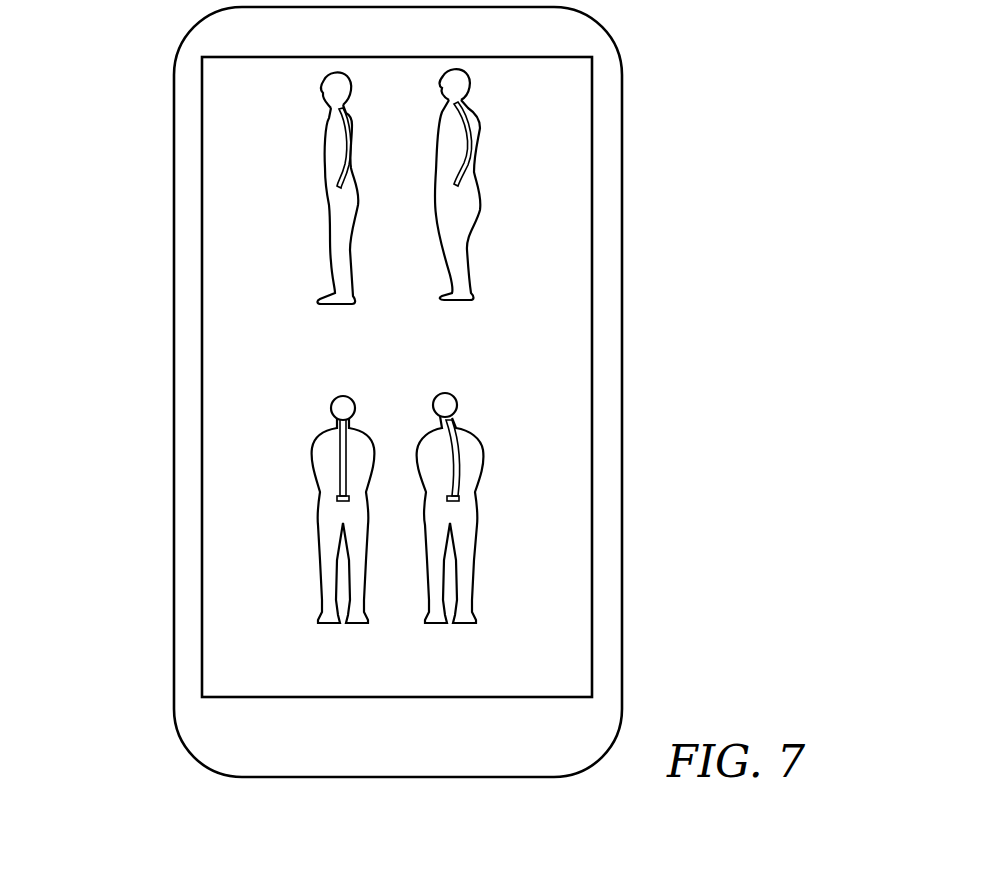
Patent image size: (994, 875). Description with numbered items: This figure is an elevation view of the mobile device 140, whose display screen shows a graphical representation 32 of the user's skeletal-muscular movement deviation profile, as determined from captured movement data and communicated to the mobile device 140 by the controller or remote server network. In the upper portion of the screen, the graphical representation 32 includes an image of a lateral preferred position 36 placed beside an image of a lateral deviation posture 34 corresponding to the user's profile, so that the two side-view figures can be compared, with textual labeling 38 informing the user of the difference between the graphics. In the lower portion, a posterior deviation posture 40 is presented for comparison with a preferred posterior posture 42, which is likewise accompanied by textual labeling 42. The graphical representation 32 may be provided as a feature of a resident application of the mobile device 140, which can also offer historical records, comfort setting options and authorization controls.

The mobile device 140 is at (622, 135).
The graphical representation 32 is at (232, 200).
The lateral preferred position 36 is at (315, 136).
The lateral deviation posture 34 is at (490, 137).
The textual labeling 38 is at (503, 318).
The preferred posterior posture 42 is at (266, 470).
The posterior deviation posture 40 is at (509, 470).